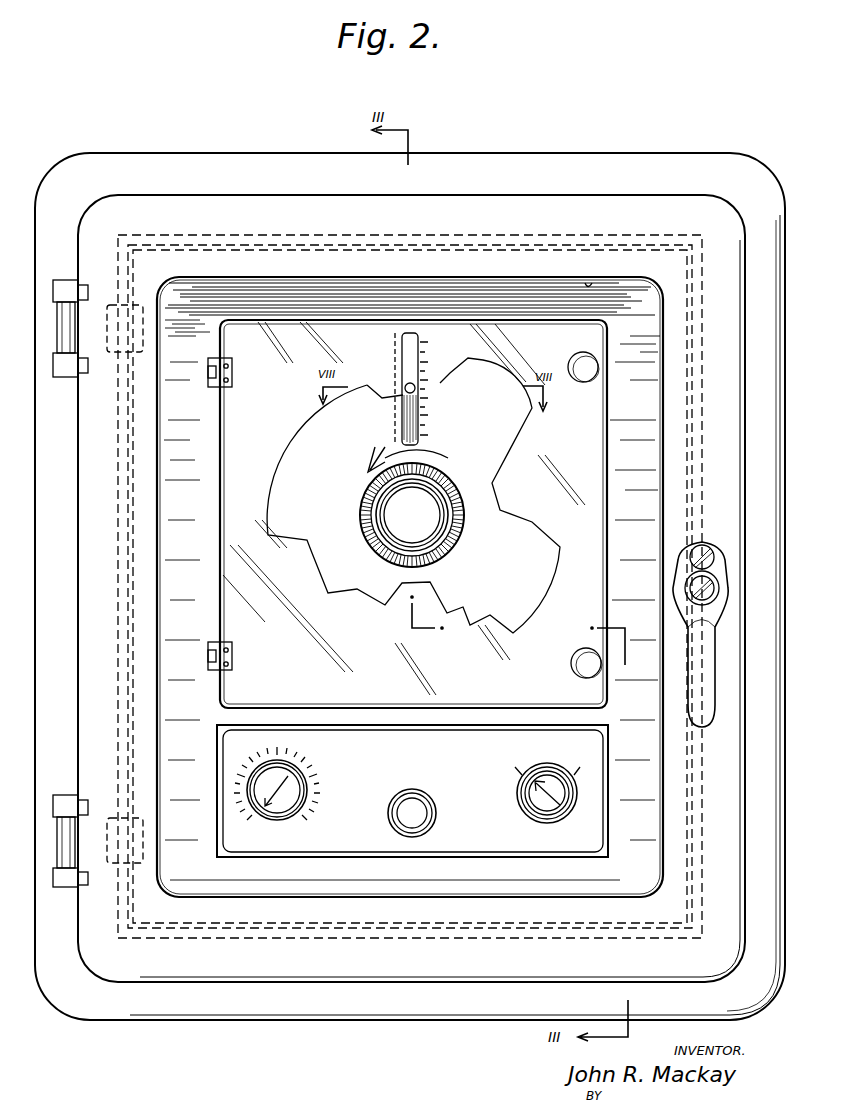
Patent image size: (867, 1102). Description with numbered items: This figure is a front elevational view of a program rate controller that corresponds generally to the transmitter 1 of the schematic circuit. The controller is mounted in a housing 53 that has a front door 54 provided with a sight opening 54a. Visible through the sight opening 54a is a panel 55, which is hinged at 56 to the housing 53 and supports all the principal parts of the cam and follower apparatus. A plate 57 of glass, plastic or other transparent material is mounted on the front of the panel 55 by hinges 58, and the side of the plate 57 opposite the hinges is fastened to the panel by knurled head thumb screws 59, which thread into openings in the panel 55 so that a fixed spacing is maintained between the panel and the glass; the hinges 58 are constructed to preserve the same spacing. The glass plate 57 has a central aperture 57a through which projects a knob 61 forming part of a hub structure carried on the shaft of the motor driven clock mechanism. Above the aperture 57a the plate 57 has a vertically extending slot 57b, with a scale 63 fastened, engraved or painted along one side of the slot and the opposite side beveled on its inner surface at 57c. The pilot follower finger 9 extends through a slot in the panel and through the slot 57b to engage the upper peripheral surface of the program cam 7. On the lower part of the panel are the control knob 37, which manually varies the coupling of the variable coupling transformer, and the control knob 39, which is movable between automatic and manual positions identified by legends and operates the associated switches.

The transmitter 1 is at (141, 1020).
The program cam 7 is at (327, 418).
The pilot follower finger 9 is at (408, 384).
The control knob 37 is at (292, 800).
The control knob 39 is at (540, 807).
The housing 53 is at (308, 1003).
The front door 54 is at (690, 210).
The sight opening 54a is at (588, 283).
The panel 55 is at (250, 882).
The hinge 56 is at (107, 307).
The plate 57 is at (230, 505).
The central aperture 57a is at (460, 530).
The slot 57b is at (404, 430).
The beveled inner surface 57c is at (395, 343).
The hinges 58 is at (208, 380).
The knurled head thumb screws 59 is at (583, 382).
The knob 61 is at (375, 527).
The scale 63 is at (440, 416).